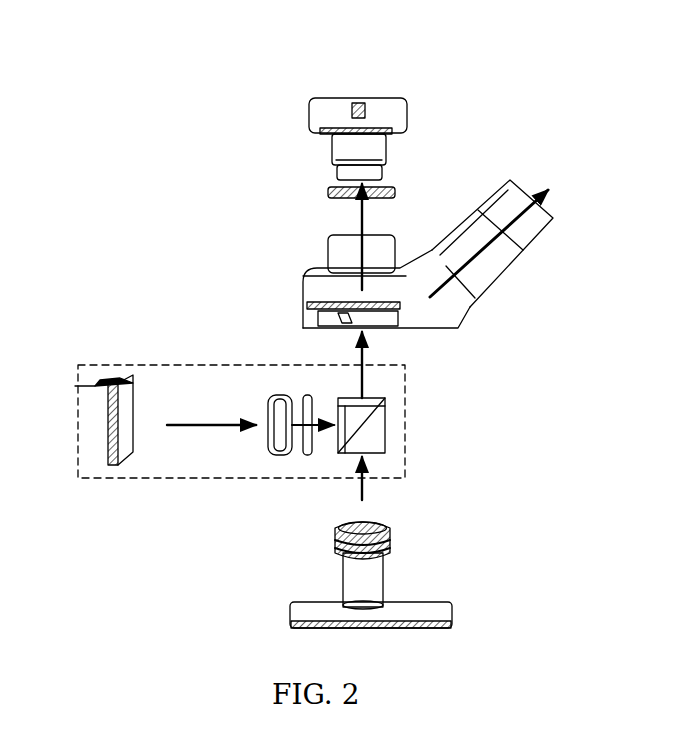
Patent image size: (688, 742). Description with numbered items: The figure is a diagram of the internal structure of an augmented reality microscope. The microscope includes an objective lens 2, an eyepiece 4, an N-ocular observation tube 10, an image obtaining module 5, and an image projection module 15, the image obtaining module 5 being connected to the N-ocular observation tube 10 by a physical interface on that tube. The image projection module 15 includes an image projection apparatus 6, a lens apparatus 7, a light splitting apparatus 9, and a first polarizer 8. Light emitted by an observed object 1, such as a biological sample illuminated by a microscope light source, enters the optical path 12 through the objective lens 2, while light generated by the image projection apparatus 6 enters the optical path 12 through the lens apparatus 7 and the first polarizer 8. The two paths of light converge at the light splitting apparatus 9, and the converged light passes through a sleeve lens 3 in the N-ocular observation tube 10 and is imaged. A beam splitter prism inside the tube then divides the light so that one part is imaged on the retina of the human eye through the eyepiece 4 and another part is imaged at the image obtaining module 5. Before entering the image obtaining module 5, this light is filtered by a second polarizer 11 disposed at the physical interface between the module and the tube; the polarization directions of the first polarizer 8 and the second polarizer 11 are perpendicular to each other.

The observed object 1 is at (288, 623).
The objective lens 2 is at (391, 582).
The sleeve lens 3 is at (388, 324).
The eyepiece 4 is at (510, 184).
The image obtaining module 5 is at (393, 88).
The image projection apparatus 6 is at (139, 380).
The lens apparatus 7 is at (269, 459).
The first polarizer 8 is at (308, 459).
The light splitting apparatus 9 is at (393, 436).
The N-ocular observation tube 10 is at (299, 273).
The second polarizer 11 is at (324, 193).
The optical path 12 is at (334, 412).
The image projection module 15 is at (93, 362).